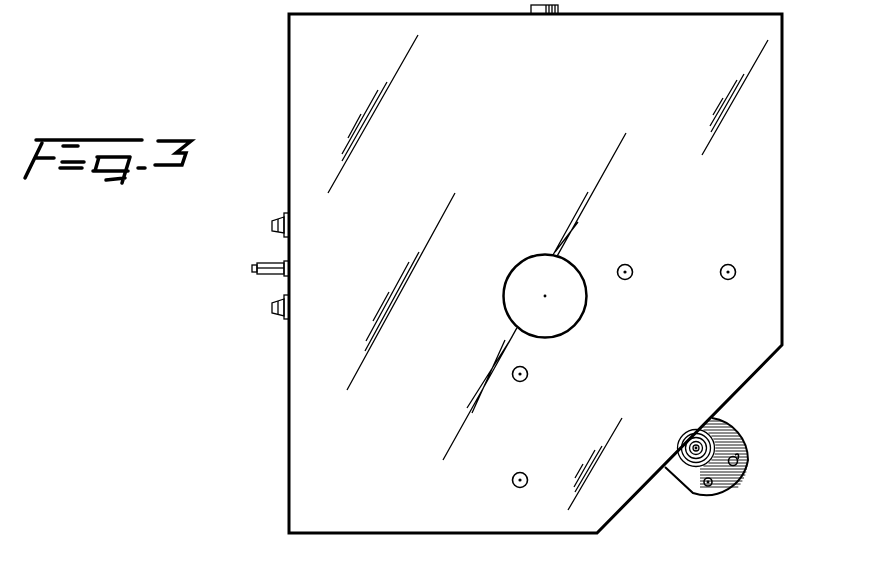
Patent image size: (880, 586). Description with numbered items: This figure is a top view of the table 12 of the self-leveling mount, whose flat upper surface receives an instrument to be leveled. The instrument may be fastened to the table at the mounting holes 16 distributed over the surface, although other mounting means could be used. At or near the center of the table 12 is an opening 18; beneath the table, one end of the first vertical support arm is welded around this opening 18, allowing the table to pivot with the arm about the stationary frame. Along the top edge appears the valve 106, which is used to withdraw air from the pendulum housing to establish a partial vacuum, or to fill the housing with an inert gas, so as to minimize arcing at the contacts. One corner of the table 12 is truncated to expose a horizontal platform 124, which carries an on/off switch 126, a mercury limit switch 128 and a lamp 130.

The table 12 is at (770, 141).
The valve 106 is at (540, 12).
The opening 18 is at (582, 288).
The mounting holes 16 is at (528, 374).
The horizontal platform 124 is at (746, 476).
The mercury limit switch 128 is at (718, 428).
The on/off switch 126 is at (741, 448).
The lamp 130 is at (706, 485).